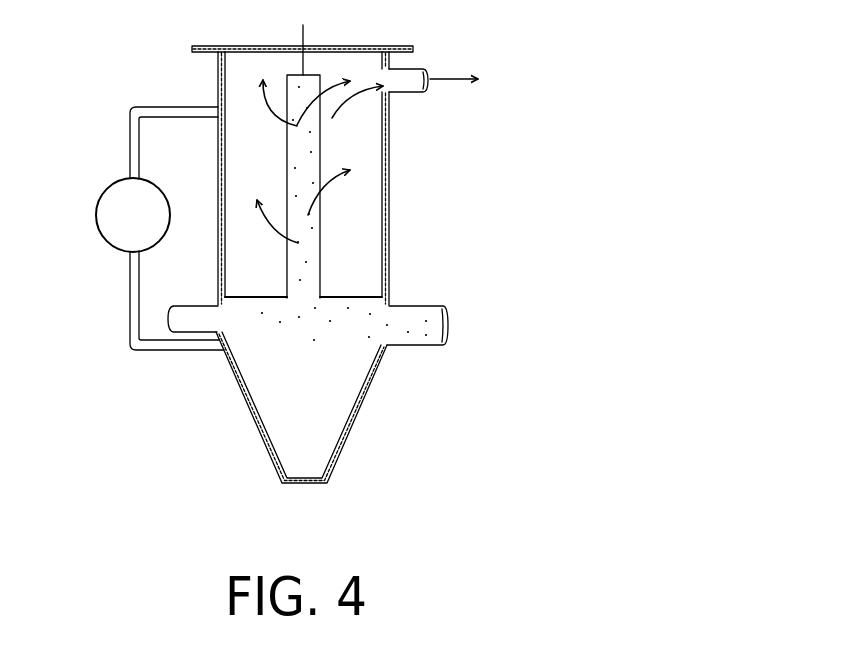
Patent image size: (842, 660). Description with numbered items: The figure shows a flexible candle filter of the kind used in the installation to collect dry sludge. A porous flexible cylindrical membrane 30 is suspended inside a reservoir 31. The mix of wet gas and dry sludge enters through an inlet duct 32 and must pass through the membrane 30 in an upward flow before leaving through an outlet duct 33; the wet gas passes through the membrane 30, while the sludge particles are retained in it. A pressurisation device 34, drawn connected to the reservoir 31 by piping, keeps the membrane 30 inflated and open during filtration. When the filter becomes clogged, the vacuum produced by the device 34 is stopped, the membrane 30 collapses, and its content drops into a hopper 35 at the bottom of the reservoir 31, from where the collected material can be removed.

The porous flexible cylindrical membrane 30 is at (320, 143).
The reservoir 31 is at (373, 223).
The inlet duct 32 is at (398, 337).
The outlet duct 33 is at (415, 70).
The pressurisation device 34 is at (117, 203).
The hopper 35 is at (257, 408).